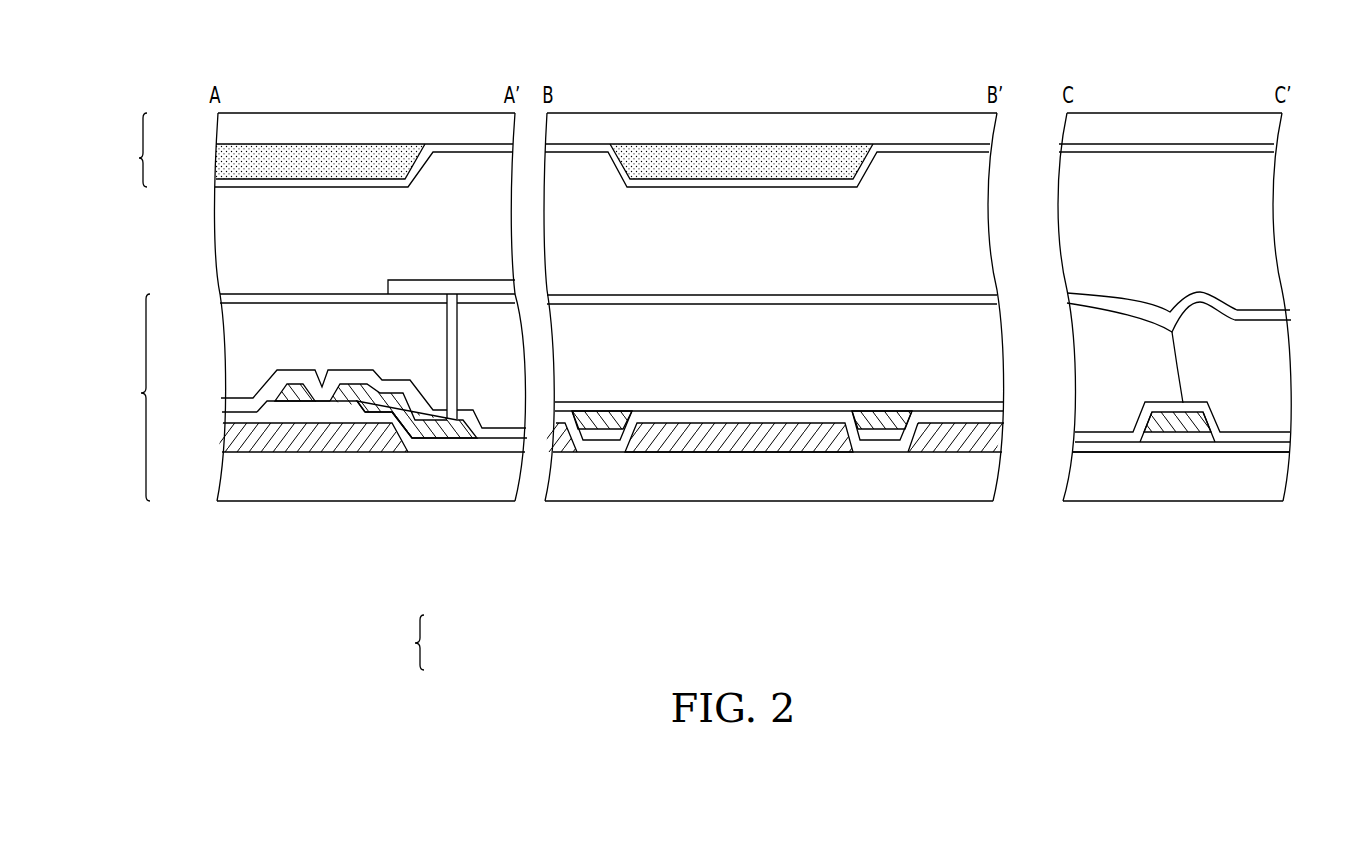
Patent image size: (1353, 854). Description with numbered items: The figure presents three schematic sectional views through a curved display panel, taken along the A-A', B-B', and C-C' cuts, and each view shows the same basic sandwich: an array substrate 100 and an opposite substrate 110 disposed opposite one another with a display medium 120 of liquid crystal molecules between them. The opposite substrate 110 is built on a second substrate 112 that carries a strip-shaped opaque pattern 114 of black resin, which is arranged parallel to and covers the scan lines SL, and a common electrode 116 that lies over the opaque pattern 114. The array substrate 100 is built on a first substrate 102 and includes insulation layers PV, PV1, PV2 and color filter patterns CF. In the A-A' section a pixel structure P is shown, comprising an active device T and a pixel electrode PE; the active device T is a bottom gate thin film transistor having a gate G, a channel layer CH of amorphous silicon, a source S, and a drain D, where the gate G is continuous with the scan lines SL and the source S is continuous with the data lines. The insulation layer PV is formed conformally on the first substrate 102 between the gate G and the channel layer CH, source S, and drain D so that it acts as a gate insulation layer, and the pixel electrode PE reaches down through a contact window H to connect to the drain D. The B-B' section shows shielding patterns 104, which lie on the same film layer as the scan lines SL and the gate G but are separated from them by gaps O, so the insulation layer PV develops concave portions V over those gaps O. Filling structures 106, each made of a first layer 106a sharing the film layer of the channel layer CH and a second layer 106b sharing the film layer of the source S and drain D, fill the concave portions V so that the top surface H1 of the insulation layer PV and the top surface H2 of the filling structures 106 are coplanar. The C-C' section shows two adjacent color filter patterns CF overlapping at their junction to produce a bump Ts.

The array substrate 100 is at (126, 397).
The first substrate 102 is at (233, 478).
The shielding pattern 104 is at (558, 440).
The filling structure 106 is at (931, 512).
The first layer 106a is at (893, 445).
The second layer 106b is at (943, 445).
The opposite substrate 110 is at (125, 150).
The second substrate 112 is at (233, 128).
The opaque pattern 114 is at (233, 158).
The common electrode 116 is at (233, 184).
The display medium 120 is at (233, 252).
The insulation layer PV is at (233, 428).
The insulation layer PV1 is at (233, 408).
The insulation layer PV2 is at (233, 301).
The color filter pattern CF is at (233, 346).
The pixel electrode PE is at (452, 280).
The contact window H is at (438, 357).
The active device T is at (367, 497).
The source S is at (291, 392).
The gate G is at (321, 405).
The channel layer CH is at (346, 387).
The drain D is at (362, 396).
The pixel structure P is at (413, 642).
The top surface H1 is at (742, 396).
The top surface H2 is at (602, 396).
The scan line SL is at (790, 442).
The gap O is at (866, 441).
The concave portion V is at (880, 438).
The bump Ts is at (1192, 310).